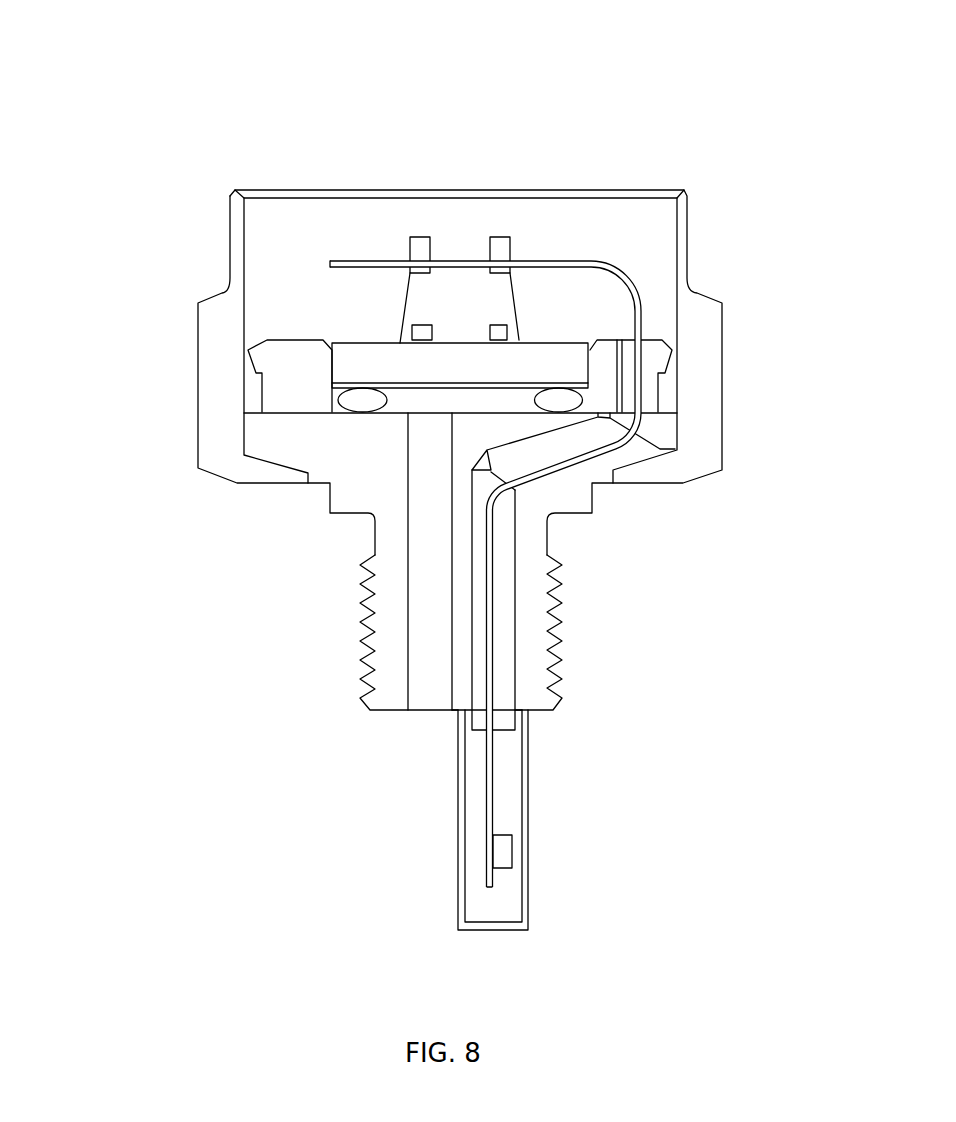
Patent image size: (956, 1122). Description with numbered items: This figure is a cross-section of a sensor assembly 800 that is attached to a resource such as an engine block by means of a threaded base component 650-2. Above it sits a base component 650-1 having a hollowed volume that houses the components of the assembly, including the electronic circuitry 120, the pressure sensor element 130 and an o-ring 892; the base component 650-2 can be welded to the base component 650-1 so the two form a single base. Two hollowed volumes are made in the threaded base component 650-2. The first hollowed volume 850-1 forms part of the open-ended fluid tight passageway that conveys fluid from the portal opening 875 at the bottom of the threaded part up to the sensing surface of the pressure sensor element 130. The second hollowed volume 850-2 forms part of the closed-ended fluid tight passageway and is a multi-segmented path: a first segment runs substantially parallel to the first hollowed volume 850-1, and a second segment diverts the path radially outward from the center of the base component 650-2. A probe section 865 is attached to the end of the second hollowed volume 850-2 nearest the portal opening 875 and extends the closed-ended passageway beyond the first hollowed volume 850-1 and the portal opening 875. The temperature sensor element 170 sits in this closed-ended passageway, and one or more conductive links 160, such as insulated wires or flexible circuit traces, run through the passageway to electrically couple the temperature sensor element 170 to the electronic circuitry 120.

The sensor assembly 800 is at (150, 100).
The electronic circuitry 120 is at (375, 234).
The pressure sensor element 130 is at (528, 352).
The base component 650-1 is at (717, 358).
The threaded base component 650-2 is at (373, 565).
The first hollowed volume 850-1 is at (420, 688).
The second hollowed volume 850-2 is at (507, 658).
The portal opening 875 is at (440, 717).
The o-ring 892 is at (366, 401).
The conductive links 160 is at (490, 775).
The temperature sensor element 170 is at (507, 847).
The probe section 865 is at (462, 870).